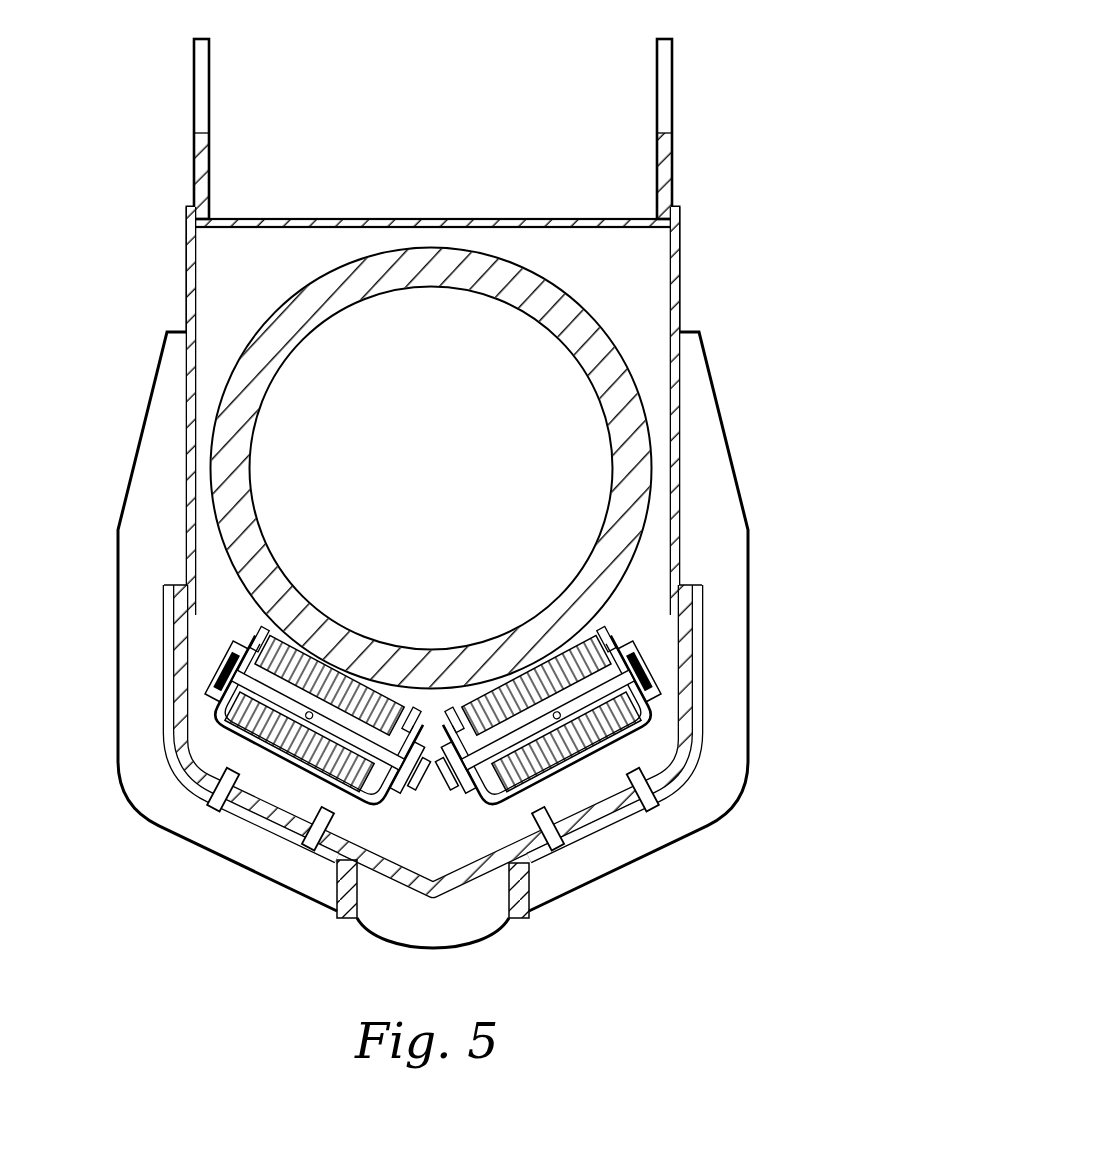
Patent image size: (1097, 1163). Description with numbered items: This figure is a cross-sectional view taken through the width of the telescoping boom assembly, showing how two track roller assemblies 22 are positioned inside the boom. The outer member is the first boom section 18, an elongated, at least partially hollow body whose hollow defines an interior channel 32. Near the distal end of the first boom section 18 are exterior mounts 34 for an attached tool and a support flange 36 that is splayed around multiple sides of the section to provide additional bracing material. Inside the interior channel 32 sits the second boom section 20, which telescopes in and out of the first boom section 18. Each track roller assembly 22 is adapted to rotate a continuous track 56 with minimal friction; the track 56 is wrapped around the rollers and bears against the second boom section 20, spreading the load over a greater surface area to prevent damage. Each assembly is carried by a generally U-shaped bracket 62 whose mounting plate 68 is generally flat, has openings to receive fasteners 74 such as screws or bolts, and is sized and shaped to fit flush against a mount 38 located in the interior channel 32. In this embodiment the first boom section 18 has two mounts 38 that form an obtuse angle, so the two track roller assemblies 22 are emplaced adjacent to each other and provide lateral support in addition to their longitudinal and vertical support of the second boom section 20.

The first boom section 18 is at (304, 217).
The second boom section 20 is at (400, 272).
The track roller assembly 22 is at (410, 803).
The interior channel 32 is at (612, 290).
The exterior mounts 34 is at (199, 84).
The support flange 36 is at (745, 515).
The mount for the track roller assembly 38 is at (253, 807).
The continuous track 56 is at (330, 658).
The U-shaped bracket 62 is at (430, 690).
The mounting plate 68 is at (275, 802).
The fasteners 74 is at (218, 805).